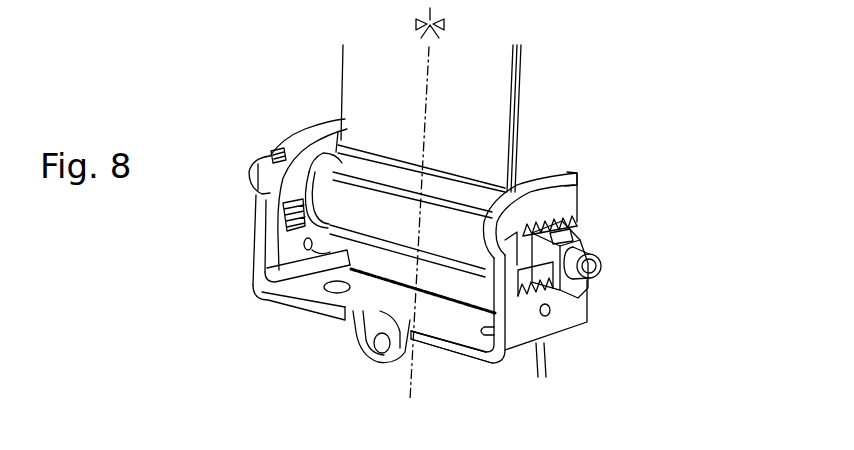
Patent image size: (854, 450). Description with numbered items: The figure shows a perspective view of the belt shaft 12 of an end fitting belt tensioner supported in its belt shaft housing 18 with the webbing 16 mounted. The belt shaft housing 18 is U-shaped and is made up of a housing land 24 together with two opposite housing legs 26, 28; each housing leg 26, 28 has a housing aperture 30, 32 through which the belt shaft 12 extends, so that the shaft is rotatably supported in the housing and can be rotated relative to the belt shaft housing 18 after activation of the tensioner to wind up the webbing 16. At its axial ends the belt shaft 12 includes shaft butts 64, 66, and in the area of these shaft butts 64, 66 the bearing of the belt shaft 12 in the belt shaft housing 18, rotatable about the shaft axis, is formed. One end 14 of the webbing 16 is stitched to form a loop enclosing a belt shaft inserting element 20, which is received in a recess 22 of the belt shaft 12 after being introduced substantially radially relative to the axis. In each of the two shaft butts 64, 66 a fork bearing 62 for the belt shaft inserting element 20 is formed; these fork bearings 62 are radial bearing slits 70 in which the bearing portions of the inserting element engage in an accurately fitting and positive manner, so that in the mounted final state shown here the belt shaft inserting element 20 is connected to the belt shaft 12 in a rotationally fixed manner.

The belt shaft 12 is at (577, 300).
The end of the webbing 14 is at (397, 263).
The webbing 16 is at (487, 77).
The belt shaft housing 18 is at (250, 297).
The belt shaft inserting element 20 is at (366, 341).
The recess 22 is at (332, 192).
The housing land 24 is at (453, 327).
The housing leg 26 is at (327, 142).
The housing leg 28 is at (563, 187).
The housing aperture 30 is at (283, 232).
The housing aperture 32 is at (527, 303).
The fork bearing 62 is at (322, 244).
The shaft butt 64 is at (272, 155).
The shaft butt 66 is at (530, 214).
The radial bearing slit 70 is at (294, 306).